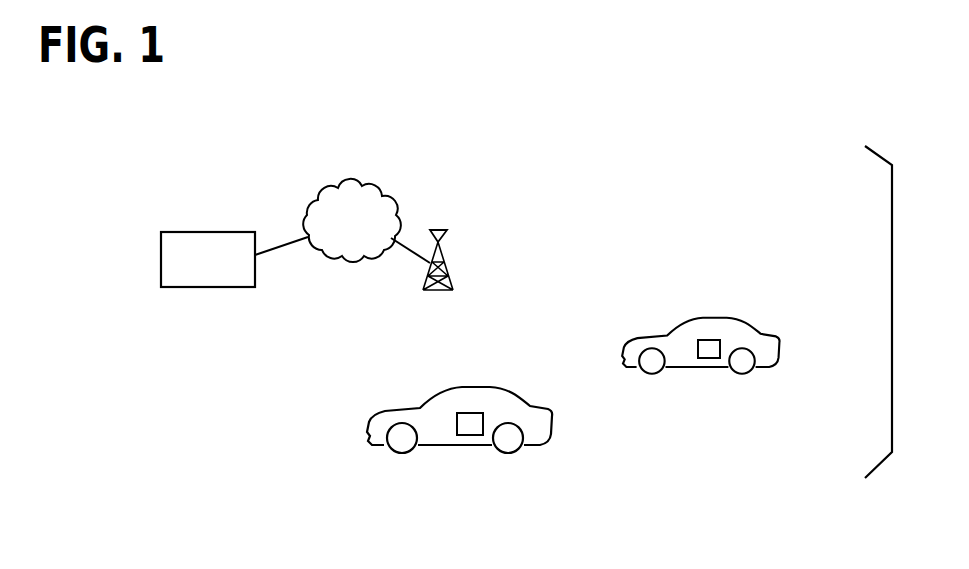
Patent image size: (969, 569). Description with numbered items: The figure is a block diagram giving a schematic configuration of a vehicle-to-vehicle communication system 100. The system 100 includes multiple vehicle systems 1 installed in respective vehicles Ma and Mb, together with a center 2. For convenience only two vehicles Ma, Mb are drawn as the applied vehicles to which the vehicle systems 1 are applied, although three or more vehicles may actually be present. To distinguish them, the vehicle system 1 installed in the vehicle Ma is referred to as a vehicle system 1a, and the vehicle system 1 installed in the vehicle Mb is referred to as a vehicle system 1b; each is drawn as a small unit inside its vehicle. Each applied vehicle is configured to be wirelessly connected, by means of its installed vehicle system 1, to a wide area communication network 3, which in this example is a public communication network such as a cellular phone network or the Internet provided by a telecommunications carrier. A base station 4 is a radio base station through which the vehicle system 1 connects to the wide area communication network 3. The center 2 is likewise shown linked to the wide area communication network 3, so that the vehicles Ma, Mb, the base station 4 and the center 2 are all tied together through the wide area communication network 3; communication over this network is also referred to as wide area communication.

The vehicle-to-vehicle communication system 100 is at (275, 173).
The vehicle system 1 is at (590, 422).
The vehicle system 1a is at (465, 436).
The vehicle system 1b is at (705, 360).
The center 2 is at (183, 232).
The wide area communication network 3 is at (371, 188).
The base station 4 is at (445, 257).
The vehicle Ma is at (522, 398).
The vehicle Mb is at (755, 330).